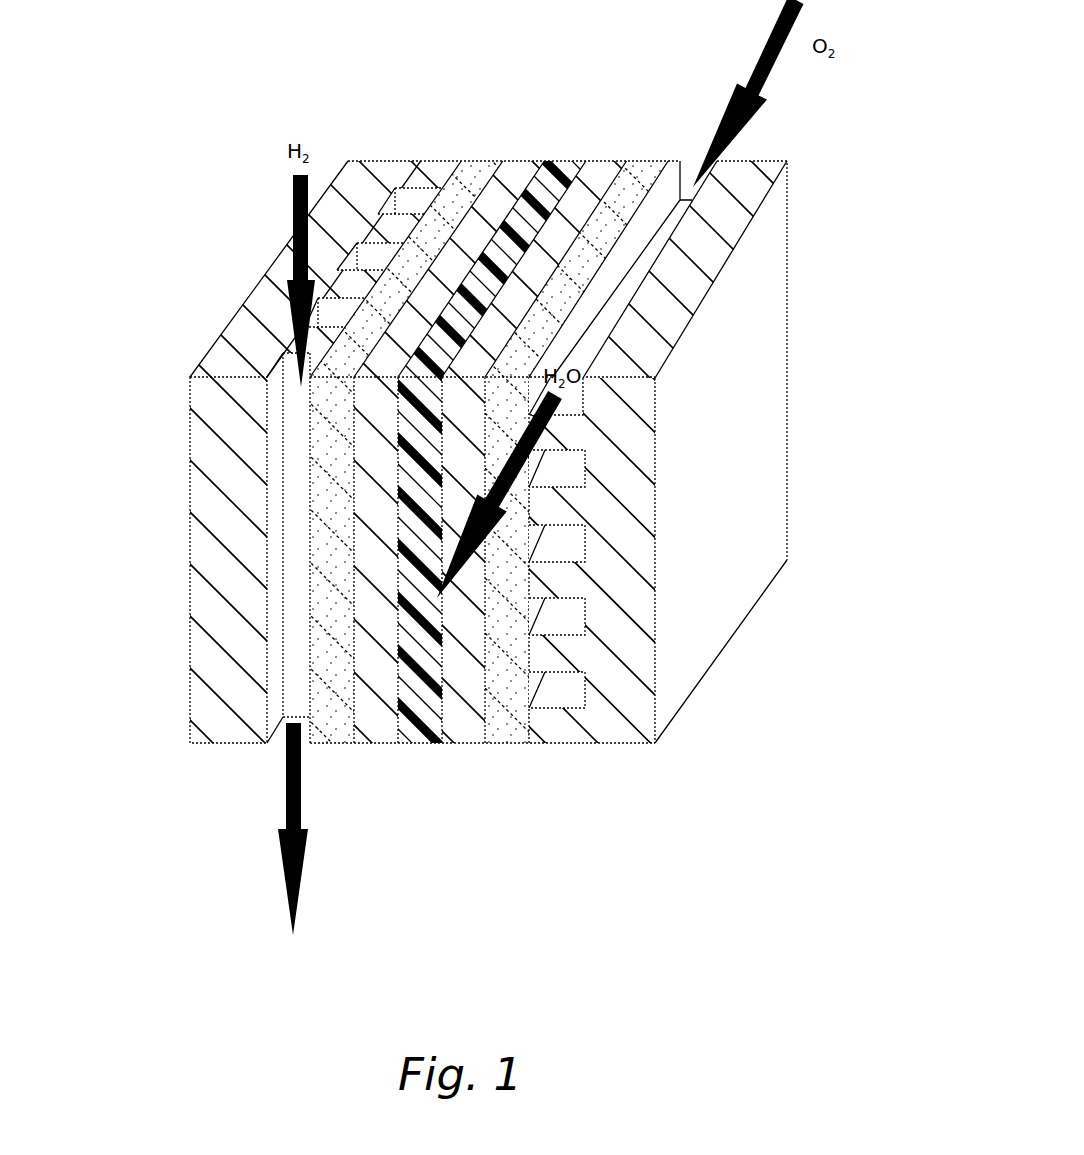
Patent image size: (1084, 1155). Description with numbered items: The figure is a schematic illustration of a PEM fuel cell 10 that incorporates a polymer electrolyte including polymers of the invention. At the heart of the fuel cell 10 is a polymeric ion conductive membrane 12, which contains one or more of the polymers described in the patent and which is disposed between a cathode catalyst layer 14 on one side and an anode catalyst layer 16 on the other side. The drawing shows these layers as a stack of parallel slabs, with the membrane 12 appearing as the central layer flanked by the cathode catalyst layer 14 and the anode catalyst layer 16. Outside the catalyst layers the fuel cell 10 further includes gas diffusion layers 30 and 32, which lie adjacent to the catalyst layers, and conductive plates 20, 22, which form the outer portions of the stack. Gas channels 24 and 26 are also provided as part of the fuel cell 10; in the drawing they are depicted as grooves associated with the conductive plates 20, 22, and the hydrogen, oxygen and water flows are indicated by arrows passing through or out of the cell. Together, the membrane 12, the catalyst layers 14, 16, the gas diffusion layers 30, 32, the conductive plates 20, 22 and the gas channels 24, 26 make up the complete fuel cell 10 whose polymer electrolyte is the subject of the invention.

The PEM fuel cell 10 is at (253, 113).
The polymeric ion conductive membrane 12 is at (565, 170).
The cathode catalyst layer 14 is at (600, 177).
The anode catalyst layer 16 is at (523, 173).
The conductive plate 20 is at (768, 285).
The conductive plate 22 is at (243, 365).
The gas channel 24 is at (547, 617).
The gas channel 26 is at (408, 200).
The gas diffusion layer 30 is at (648, 185).
The gas diffusion layer 32 is at (468, 173).